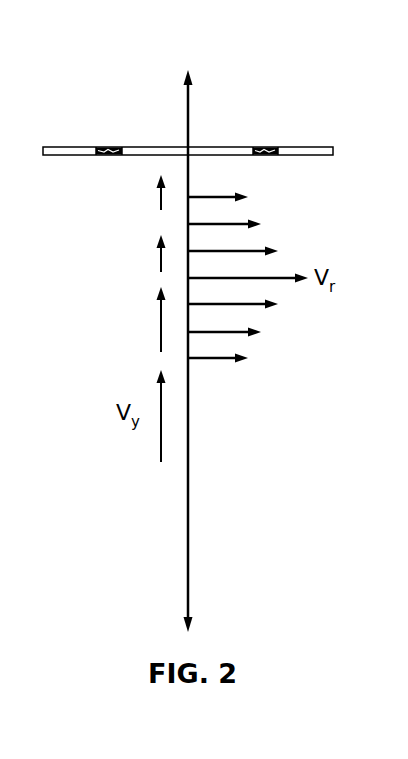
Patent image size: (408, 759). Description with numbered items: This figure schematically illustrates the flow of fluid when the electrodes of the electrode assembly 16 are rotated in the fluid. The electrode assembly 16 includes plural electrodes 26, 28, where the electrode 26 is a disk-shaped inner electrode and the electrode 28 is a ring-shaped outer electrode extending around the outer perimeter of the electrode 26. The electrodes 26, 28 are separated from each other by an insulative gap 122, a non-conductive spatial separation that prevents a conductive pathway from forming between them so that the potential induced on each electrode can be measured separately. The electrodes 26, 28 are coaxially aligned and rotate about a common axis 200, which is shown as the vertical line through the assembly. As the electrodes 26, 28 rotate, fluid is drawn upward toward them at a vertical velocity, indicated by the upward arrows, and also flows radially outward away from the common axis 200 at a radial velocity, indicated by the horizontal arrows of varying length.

The electrode assembly 16 is at (97, 57).
The insulative gap 122 is at (193, 168).
The common axis 200 is at (187, 118).
The electrode 26 is at (147, 155).
The electrode 28 is at (312, 155).